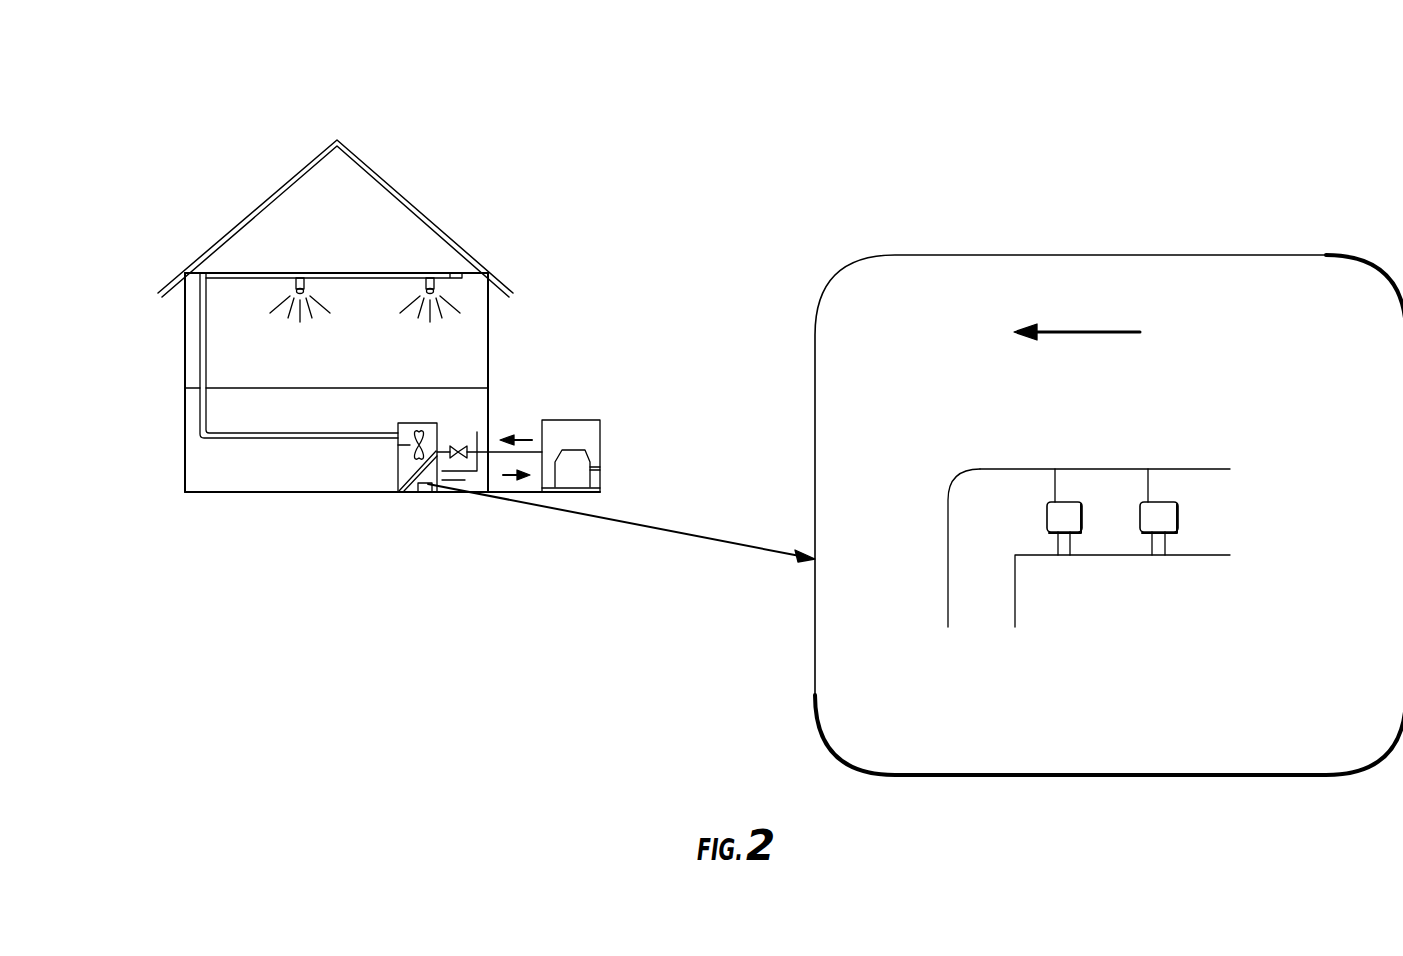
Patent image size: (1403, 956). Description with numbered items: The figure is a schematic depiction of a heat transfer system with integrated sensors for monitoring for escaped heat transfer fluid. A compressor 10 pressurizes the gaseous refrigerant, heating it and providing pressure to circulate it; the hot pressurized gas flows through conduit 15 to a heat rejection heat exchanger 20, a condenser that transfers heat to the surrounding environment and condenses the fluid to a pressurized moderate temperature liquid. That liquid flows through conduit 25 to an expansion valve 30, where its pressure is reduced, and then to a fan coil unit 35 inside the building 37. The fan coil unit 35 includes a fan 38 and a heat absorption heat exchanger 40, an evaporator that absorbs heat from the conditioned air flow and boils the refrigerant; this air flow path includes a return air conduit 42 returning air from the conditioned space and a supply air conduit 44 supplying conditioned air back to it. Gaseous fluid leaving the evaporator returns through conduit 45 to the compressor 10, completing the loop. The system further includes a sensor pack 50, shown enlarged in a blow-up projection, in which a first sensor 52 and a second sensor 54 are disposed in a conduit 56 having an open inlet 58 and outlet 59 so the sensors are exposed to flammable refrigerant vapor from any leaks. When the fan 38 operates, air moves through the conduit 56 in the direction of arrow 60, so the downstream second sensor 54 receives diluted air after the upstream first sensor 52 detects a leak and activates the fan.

The compressor 10 is at (590, 450).
The conduit 15 is at (596, 470).
The heat rejection heat exchanger 20 is at (600, 455).
The conduit 25 is at (492, 440).
The expansion valve 30 is at (459, 442).
The fan coil unit 35 is at (437, 424).
The building 37 is at (488, 310).
The fan 38 is at (400, 452).
The heat absorption heat exchanger 40 is at (413, 470).
The return air conduit 42 is at (481, 460).
The supply air conduit 44 is at (207, 372).
The conduit 45 is at (482, 463).
The sensor pack 50 is at (427, 491).
The first sensor 52 is at (1148, 475).
The second sensor 54 is at (1055, 475).
The conduit 56 is at (1108, 555).
The inlet 58 is at (1207, 513).
The outlet 59 is at (977, 612).
The arrow 60 is at (1097, 332).